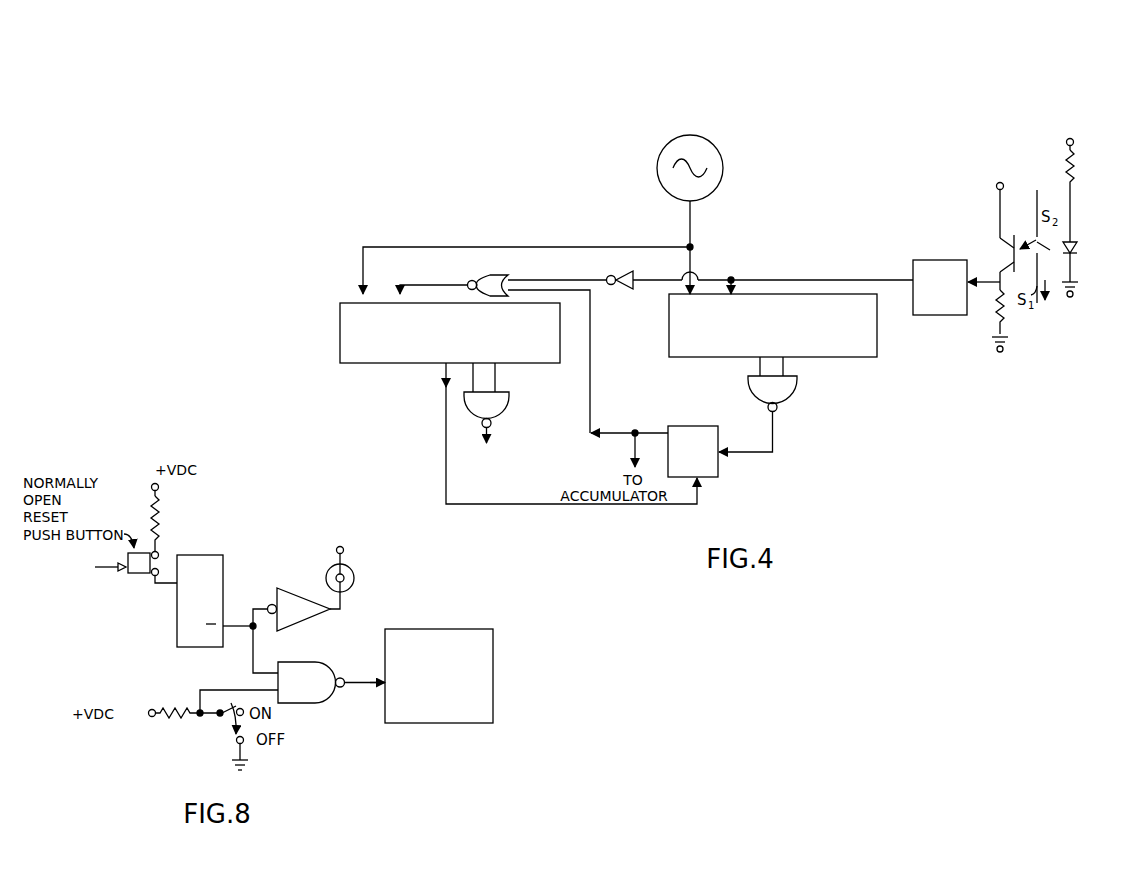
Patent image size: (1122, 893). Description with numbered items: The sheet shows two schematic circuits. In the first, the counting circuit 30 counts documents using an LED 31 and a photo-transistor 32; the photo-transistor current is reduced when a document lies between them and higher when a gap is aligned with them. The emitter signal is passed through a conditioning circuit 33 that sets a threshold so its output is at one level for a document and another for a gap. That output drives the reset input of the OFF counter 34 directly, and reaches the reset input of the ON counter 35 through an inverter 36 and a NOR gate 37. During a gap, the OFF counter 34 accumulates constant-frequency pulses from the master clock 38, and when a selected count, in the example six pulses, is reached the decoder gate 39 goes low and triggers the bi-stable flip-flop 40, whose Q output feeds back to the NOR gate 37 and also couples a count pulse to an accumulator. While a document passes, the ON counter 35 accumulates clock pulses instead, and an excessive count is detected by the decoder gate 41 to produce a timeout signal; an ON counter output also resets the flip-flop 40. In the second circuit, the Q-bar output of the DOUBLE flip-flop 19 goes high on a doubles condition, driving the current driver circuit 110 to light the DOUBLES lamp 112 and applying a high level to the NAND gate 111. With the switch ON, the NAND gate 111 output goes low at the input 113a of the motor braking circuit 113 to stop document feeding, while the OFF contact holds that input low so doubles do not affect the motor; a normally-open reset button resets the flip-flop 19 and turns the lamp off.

In FIG. 4, the counting circuit 30 is at (513, 187).
In FIG. 4, the LED 31 is at (1078, 246).
In FIG. 4, the photo-transistor 32 is at (1002, 246).
In FIG. 4, the conditioning circuit 33 is at (958, 318).
In FIG. 4, the OFF counter 34 is at (669, 330).
In FIG. 4, the ON counter 35 is at (340, 328).
In FIG. 4, the inverter 36 is at (630, 272).
In FIG. 4, the NOR gate 37 is at (492, 276).
In FIG. 4, the master clock 38 is at (723, 170).
In FIG. 4, the decoder gate 39 is at (799, 386).
In FIG. 4, the bi-stable flip-flop 40 is at (719, 436).
In FIG. 4, the decoder gate 41 is at (509, 400).
In FIG. 8, the DOUBLE flip-flop 19 is at (190, 614).
In FIG. 8, the current driver circuit 110 is at (296, 588).
In FIG. 8, the NAND gate 111 is at (313, 662).
In FIG. 8, the DOUBLES lamp 112 is at (354, 582).
In FIG. 8, the motor braking circuit 113 is at (456, 629).
In FIG. 8, the input 113a is at (380, 692).